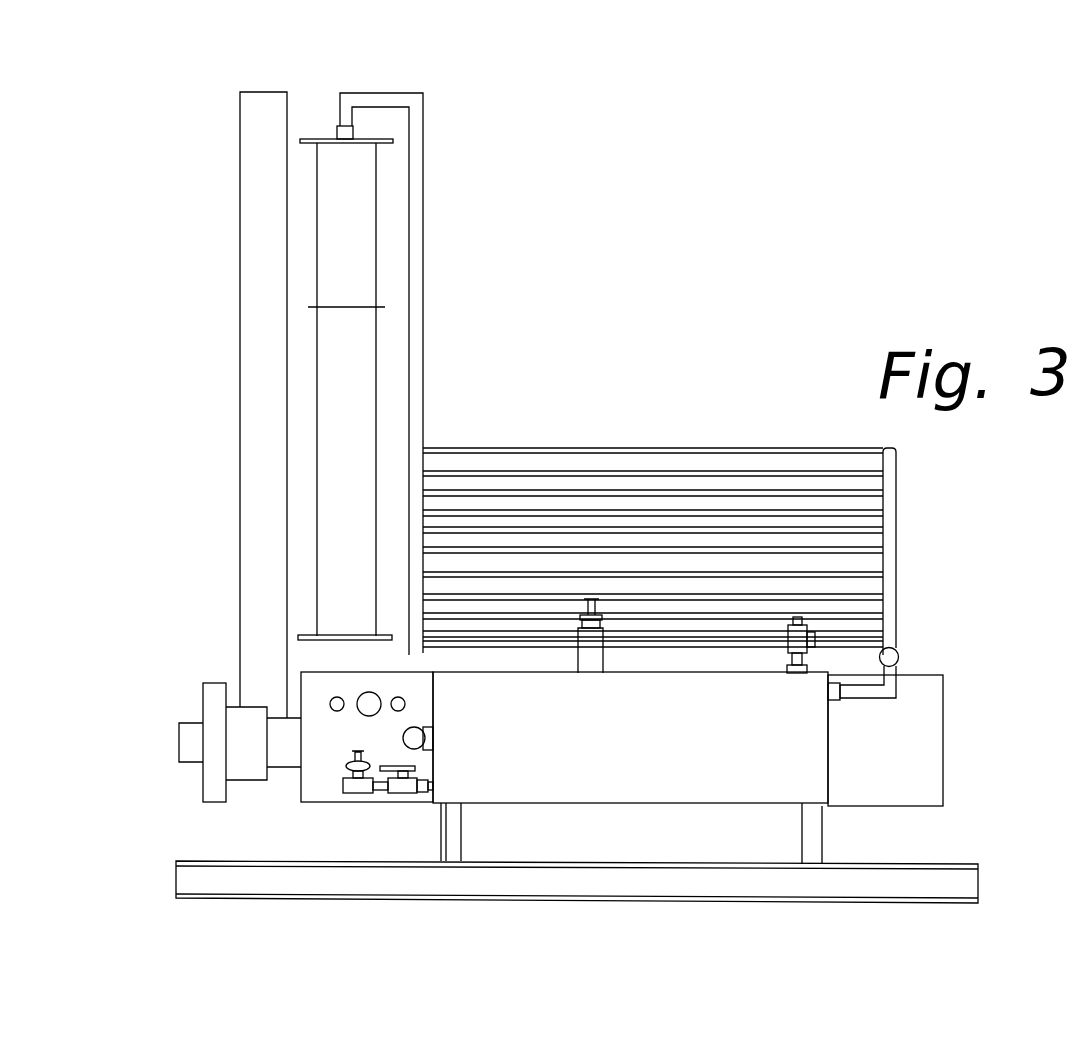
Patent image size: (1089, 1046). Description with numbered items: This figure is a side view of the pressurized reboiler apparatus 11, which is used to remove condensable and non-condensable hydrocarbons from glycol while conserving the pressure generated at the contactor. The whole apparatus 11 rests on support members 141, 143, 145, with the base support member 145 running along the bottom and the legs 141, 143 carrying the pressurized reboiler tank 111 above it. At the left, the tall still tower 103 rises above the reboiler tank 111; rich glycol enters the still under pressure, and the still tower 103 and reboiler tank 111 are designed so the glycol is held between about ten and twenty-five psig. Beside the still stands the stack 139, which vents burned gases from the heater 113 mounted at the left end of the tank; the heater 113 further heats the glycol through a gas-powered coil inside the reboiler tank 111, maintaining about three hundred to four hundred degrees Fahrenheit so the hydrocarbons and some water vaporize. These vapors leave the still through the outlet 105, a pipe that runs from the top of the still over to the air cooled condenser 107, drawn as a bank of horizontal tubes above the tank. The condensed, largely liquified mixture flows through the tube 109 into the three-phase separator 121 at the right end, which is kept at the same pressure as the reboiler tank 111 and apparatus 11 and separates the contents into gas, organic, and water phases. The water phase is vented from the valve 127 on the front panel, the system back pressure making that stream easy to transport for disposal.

The apparatus 11 is at (815, 292).
The still tower 103 is at (365, 209).
The outlet 105 is at (413, 92).
The air cooled condenser 107 is at (898, 475).
The tube 109 is at (879, 696).
The pressurized reboiler tank 111 is at (918, 672).
The heater 113 is at (203, 784).
The three-phase separator 121 is at (830, 760).
The valve 127 is at (362, 794).
The stack 139 is at (243, 405).
The support member 141 is at (823, 834).
The support member 143 is at (462, 830).
The support member 145 is at (979, 882).